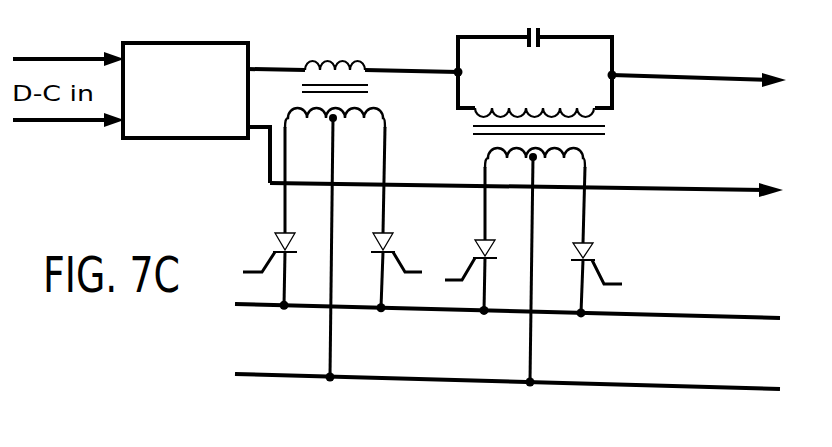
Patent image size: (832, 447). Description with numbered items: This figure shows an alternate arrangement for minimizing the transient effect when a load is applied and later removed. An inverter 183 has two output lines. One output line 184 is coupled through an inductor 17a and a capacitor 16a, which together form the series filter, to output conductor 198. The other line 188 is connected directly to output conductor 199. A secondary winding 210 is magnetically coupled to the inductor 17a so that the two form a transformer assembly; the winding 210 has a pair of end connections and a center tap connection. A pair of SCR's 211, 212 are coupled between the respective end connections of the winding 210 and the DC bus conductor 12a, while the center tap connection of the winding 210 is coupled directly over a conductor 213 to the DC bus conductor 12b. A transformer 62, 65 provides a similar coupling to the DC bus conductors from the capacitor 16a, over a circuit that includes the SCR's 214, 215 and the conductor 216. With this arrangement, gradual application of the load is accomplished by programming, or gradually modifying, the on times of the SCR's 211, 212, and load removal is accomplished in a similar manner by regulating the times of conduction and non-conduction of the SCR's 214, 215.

The inverter 183 is at (185, 79).
The output line 184 is at (277, 67).
The inductor 17a is at (338, 60).
The secondary winding 210 is at (352, 122).
The capacitor 16a is at (540, 33).
The transformer 62 is at (520, 100).
The transformer 65 is at (541, 161).
The output conductor 198 is at (707, 75).
The output conductor 199 is at (713, 186).
The other line 188 is at (268, 164).
The SCR 211 is at (275, 241).
The SCR 212 is at (388, 240).
The SCR 214 is at (476, 246).
The SCR 215 is at (592, 251).
The conductor 213 is at (330, 347).
The conductor 216 is at (534, 350).
The DC bus conductor 12a is at (724, 316).
The DC bus conductor 12b is at (724, 390).